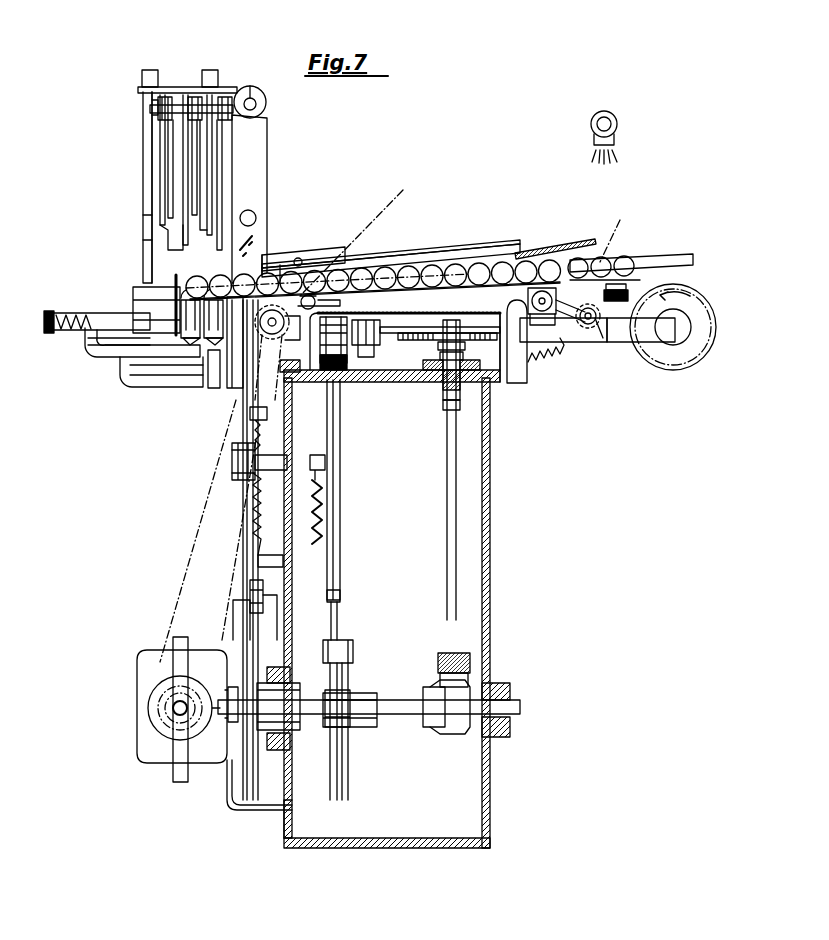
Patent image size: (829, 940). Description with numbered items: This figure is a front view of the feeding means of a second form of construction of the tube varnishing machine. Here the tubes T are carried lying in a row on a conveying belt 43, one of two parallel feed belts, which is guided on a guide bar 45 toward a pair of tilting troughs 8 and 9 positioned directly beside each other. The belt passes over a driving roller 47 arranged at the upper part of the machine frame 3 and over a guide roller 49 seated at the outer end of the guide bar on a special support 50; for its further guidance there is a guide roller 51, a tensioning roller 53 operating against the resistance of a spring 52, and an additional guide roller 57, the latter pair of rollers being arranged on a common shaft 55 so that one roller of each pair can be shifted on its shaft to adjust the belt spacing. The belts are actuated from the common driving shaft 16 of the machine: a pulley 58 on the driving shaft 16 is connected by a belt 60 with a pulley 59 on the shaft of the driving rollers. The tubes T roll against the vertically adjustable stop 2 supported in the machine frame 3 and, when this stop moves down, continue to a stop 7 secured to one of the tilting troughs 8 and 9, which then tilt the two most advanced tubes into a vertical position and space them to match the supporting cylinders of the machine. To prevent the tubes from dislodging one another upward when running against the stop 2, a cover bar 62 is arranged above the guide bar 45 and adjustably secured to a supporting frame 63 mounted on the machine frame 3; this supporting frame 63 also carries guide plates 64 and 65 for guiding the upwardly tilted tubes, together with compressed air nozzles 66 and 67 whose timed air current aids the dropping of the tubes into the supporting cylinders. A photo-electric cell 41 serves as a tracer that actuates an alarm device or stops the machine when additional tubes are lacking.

The stop 2 is at (238, 340).
The machine frame 3 is at (492, 472).
The stop 7 is at (176, 300).
The tilting trough 8 is at (202, 340).
The tilting trough 9 is at (182, 333).
The common driving shaft 16 is at (178, 708).
The photo-electric cell 41 is at (618, 282).
The conveying belt 43 is at (481, 272).
The guide bar 45 is at (434, 270).
The driving roller 47 is at (282, 272).
The guide roller 49 is at (672, 372).
The special support 50 is at (590, 345).
The guide roller 51 is at (310, 294).
The spring 52 is at (550, 352).
The tensioning roller 53 is at (597, 309).
The common shaft 55 is at (668, 340).
The guide roller 57 is at (546, 288).
The pulley 58 is at (148, 715).
The pulley 59 is at (270, 338).
The belt 60 is at (205, 477).
The cover bar 62 is at (396, 258).
The supporting frame 63 is at (185, 100).
The guide plate 64 is at (198, 173).
The guide plate 65 is at (225, 193).
The compressed air nozzle 66 is at (146, 140).
The compressed air nozzle 67 is at (212, 92).
The tube T is at (465, 231).